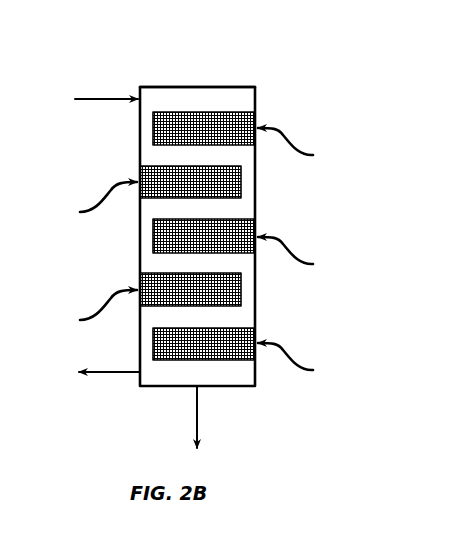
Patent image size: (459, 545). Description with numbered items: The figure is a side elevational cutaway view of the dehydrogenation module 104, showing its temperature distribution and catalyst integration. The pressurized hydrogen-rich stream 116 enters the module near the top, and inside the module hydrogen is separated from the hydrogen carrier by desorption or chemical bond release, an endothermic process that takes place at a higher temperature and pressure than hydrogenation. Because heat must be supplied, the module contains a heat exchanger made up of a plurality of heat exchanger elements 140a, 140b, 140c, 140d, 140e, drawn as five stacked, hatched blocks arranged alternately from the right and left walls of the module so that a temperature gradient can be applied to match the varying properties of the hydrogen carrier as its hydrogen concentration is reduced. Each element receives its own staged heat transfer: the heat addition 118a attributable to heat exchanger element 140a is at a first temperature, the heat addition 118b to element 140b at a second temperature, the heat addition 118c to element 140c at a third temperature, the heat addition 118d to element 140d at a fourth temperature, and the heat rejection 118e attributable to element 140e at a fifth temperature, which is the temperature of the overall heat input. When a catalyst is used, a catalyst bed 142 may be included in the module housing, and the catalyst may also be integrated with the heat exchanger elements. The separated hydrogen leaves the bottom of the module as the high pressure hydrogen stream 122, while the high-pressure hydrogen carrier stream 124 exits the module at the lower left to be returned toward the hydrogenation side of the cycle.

The dehydrogenation module 104 is at (266, 34).
The catalyst bed 142 is at (235, 86).
The pressurized hydrogen-rich stream 116 is at (94, 97).
The high-pressure hydrogen carrier stream 124 is at (110, 374).
The high pressure hydrogen stream 122 is at (200, 415).
The heat exchanger element 140a is at (160, 127).
The heat exchanger element 140b is at (232, 179).
The heat exchanger element 140c is at (160, 237).
The heat exchanger element 140d is at (232, 288).
The heat exchanger element 140e is at (160, 343).
The heat addition 118a is at (283, 134).
The heat addition 118b is at (113, 189).
The heat addition 118c is at (283, 243).
The heat addition 118d is at (113, 297).
The heat rejection 118e is at (283, 349).